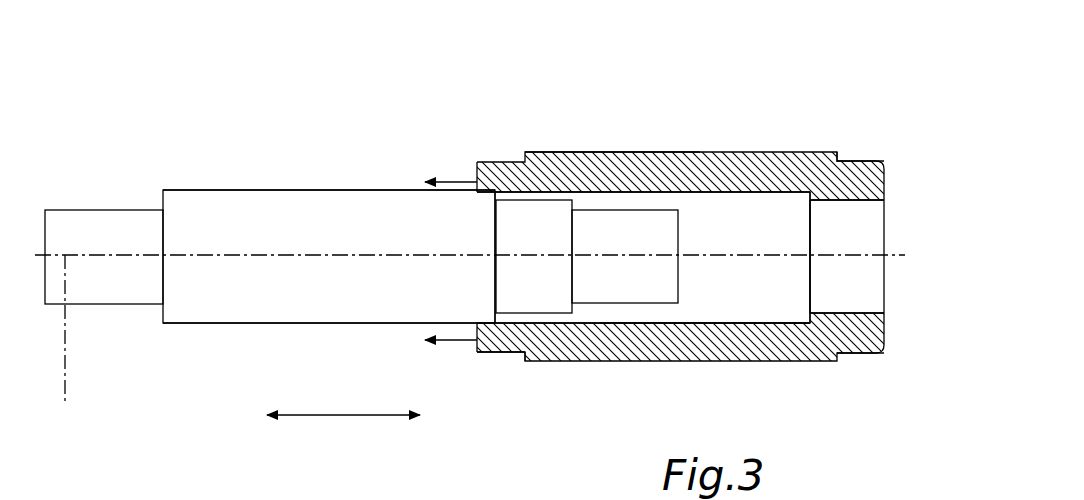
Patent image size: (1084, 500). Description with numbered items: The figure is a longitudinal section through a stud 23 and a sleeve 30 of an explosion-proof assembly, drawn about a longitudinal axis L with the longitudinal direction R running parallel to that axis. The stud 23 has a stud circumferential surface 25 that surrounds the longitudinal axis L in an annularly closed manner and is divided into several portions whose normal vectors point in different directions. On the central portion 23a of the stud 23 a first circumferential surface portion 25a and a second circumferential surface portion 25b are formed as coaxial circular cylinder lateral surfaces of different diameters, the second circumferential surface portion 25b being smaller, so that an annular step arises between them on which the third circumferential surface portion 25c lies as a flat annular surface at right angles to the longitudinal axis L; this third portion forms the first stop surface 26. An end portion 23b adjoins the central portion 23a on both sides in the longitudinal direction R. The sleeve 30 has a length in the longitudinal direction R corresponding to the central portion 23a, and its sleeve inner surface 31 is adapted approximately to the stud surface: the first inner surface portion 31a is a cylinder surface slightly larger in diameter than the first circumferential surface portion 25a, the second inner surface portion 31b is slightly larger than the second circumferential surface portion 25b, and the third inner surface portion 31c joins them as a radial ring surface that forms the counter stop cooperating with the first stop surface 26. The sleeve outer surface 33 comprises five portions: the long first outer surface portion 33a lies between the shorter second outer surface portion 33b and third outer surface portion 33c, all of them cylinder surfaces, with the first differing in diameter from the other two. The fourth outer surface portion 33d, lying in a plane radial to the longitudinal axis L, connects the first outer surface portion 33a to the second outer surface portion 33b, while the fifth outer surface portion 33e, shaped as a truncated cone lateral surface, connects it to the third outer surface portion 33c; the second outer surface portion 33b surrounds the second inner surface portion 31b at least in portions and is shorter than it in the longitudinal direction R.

The stud 23 is at (99, 220).
The central portion 23a is at (309, 297).
The end portion 23b is at (100, 286).
The stud circumferential surface 25 is at (203, 312).
The first circumferential surface portion 25a is at (313, 212).
The second circumferential surface portion 25b is at (530, 212).
The third circumferential surface portion 25c is at (540, 362).
The first stop surface 26 is at (486, 257).
The sleeve 30 is at (708, 151).
The sleeve inner surface 31 is at (768, 286).
The first inner surface portion 31a is at (742, 320).
The second inner surface portion 31b is at (833, 308).
The third inner surface portion 31c is at (806, 194).
The sleeve outer surface 33 is at (640, 365).
The first outer surface portion 33a is at (597, 150).
The second outer surface portion 33b is at (850, 357).
The third outer surface portion 33c is at (492, 358).
The fourth outer surface portion 33d is at (840, 157).
The fifth outer surface portion 33e is at (512, 362).
The longitudinal axis L is at (63, 342).
The longitudinal direction R is at (345, 418).